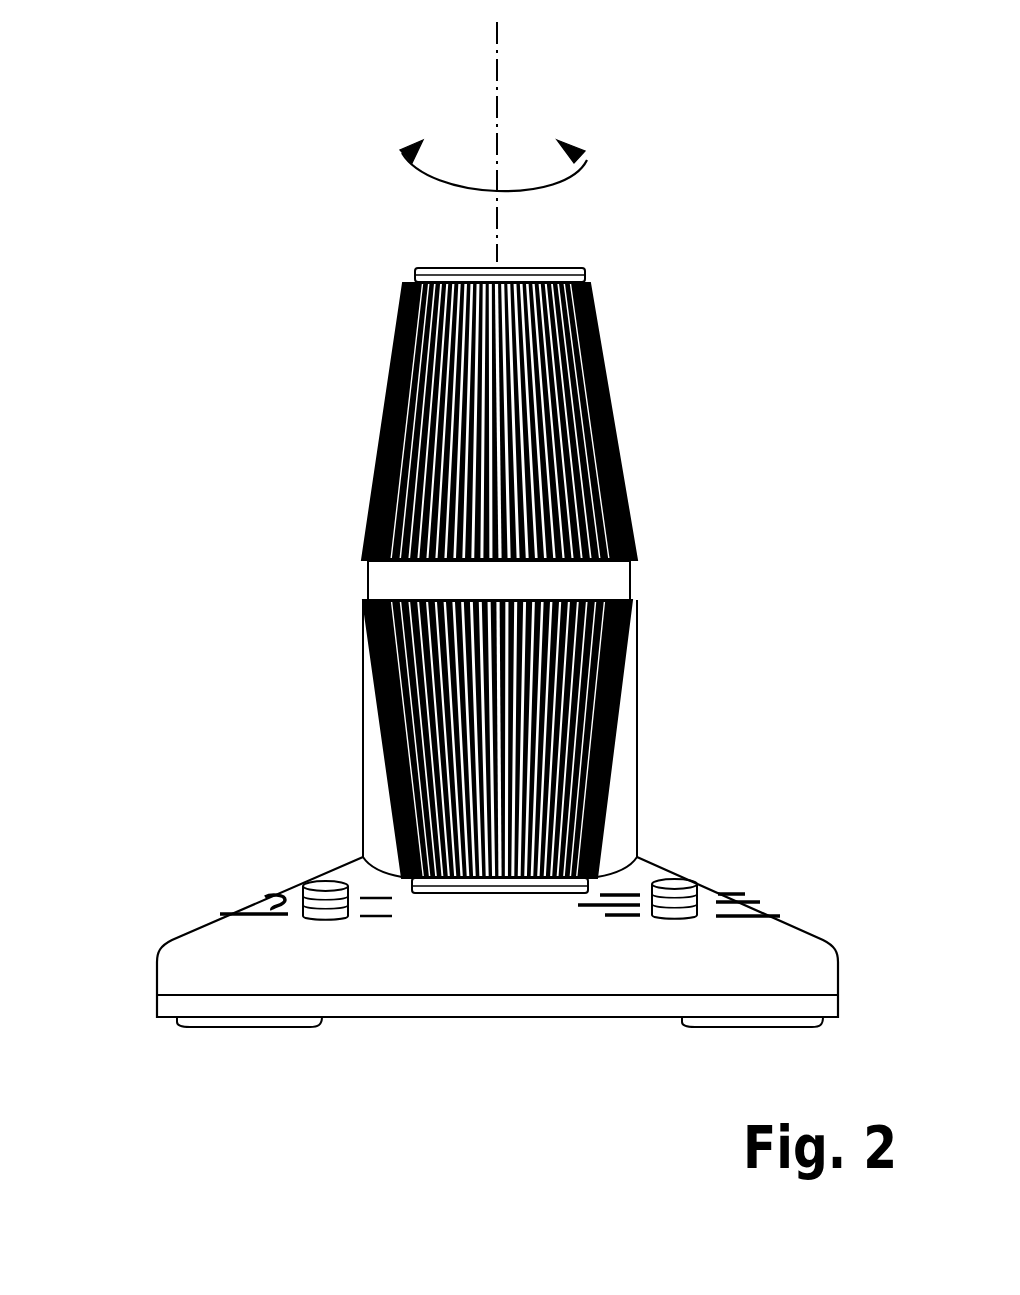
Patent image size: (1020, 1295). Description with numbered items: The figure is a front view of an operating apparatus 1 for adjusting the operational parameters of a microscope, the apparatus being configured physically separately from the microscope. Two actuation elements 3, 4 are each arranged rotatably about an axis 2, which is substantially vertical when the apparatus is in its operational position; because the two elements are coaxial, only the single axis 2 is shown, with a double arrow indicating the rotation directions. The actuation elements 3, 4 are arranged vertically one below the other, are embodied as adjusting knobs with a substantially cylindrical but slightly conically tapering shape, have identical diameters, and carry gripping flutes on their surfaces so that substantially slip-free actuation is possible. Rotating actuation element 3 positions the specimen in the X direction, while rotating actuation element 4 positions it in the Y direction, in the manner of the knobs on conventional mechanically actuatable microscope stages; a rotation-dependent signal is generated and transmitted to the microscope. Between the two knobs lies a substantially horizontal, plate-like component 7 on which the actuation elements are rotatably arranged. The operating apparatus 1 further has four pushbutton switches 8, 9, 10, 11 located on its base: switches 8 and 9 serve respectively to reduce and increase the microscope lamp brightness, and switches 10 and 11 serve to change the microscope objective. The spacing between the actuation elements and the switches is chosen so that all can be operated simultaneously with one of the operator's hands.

The operating apparatus 1 is at (240, 684).
The axis 2 is at (503, 123).
The actuation element 3 is at (620, 400).
The actuation element 4 is at (620, 760).
The component 7 is at (387, 582).
The switch 8 is at (327, 880).
The switch 9 is at (310, 908).
The switch 10 is at (675, 878).
The switch 11 is at (733, 893).